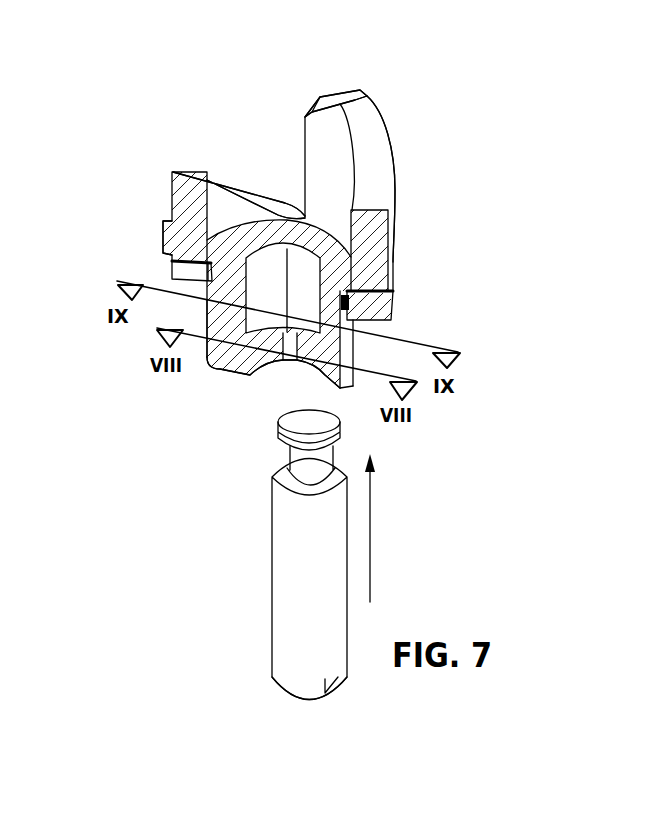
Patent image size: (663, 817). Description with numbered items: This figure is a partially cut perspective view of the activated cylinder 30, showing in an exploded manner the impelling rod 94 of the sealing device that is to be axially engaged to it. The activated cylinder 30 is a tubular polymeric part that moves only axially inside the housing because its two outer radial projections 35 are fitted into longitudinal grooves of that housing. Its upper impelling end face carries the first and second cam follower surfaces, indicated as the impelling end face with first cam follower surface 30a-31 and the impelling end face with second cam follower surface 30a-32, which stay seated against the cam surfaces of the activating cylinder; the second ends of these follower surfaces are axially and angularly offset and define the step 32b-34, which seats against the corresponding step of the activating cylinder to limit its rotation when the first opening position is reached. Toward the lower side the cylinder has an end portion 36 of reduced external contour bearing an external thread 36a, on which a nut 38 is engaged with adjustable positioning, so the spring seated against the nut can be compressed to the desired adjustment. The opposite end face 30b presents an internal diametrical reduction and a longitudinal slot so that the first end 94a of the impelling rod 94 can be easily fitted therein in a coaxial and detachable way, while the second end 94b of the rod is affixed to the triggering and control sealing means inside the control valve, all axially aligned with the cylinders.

The activated cylinder 30 is at (420, 176).
The impelling end face with first cam follower surface 30a-31 is at (322, 98).
The impelling end face with second cam follower surface 30a-32 is at (381, 128).
The second end of second cam follower surface and step 32b-34 is at (303, 165).
The outer radial projection 35 is at (157, 230).
The end portion 36 is at (228, 293).
The external thread 36a is at (199, 309).
The nut 38 is at (157, 263).
The opposite end face 30b is at (232, 370).
The impelling rod 94 is at (310, 545).
The first end 94a is at (277, 450).
The second end 94b is at (302, 672).